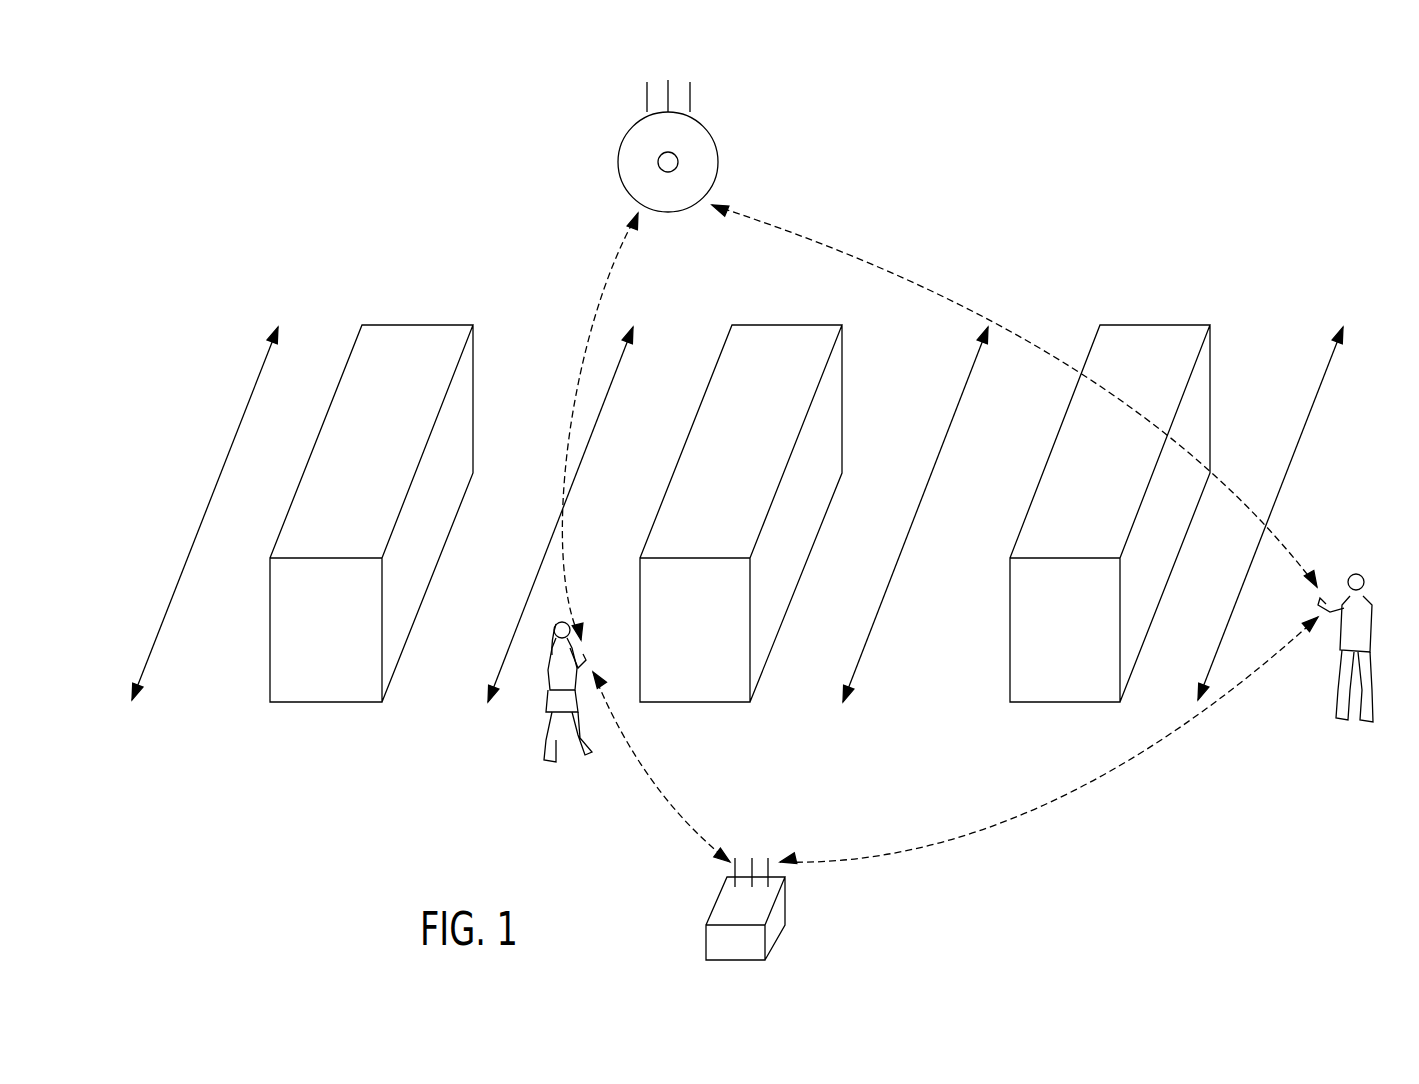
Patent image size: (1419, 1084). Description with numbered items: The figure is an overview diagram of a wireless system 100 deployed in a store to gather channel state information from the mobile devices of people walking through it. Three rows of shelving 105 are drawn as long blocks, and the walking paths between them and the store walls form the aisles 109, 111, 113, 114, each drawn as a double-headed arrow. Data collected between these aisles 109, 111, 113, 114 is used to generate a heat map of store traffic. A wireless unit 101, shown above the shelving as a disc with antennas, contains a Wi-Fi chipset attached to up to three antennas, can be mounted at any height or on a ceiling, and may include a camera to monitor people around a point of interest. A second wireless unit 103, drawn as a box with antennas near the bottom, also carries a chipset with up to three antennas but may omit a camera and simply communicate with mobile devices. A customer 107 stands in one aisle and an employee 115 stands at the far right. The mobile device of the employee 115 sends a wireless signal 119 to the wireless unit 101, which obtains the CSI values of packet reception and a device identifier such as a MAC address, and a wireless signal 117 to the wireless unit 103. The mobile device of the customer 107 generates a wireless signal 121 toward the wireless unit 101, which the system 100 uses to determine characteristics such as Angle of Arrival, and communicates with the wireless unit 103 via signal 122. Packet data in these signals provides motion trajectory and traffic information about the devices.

The wireless system 100 is at (514, 114).
The wireless unit 101 is at (710, 130).
The wireless unit 103 is at (775, 918).
The shelving 105 is at (323, 702).
The customer 107 is at (548, 715).
The aisle 109 is at (222, 465).
The aisle 111 is at (544, 548).
The aisle 113 is at (908, 528).
The aisle 114 is at (1290, 462).
The employee 115 is at (1370, 645).
The wireless signal 117 is at (1152, 755).
The wireless signal 119 is at (920, 283).
The wireless signal 121 is at (598, 290).
The signal 122 is at (658, 790).